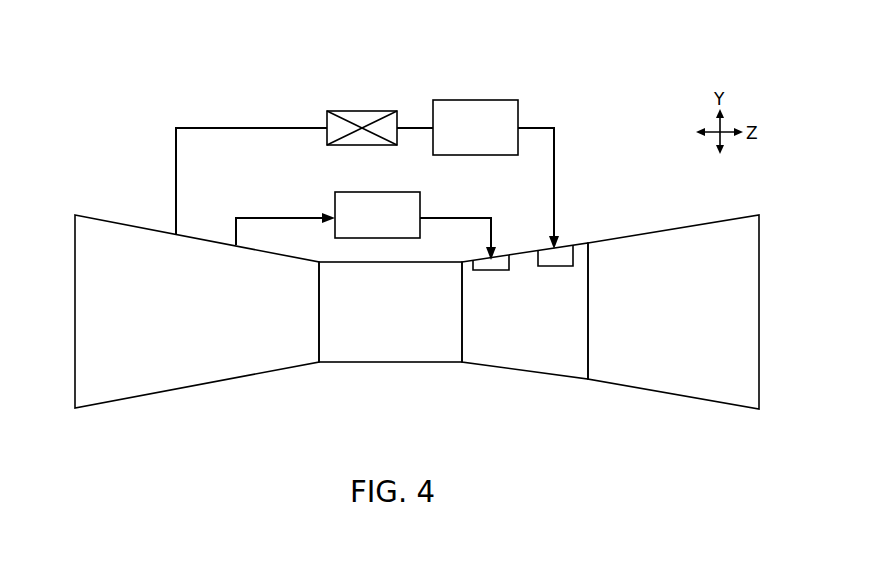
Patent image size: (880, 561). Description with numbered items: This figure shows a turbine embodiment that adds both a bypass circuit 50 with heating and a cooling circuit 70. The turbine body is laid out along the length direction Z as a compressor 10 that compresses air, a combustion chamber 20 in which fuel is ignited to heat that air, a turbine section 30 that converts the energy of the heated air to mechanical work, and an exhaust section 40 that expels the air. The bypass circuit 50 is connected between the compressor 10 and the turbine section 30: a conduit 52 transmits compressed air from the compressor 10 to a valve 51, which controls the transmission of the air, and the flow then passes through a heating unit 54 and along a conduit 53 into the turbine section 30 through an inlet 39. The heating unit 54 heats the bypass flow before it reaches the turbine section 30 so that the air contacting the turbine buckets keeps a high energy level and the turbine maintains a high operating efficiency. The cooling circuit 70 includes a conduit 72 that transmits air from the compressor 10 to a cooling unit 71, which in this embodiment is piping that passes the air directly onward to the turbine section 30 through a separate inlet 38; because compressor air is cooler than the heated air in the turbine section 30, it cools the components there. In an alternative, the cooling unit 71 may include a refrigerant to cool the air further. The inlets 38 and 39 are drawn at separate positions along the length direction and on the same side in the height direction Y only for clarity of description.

The compressor 10 is at (195, 377).
The combustion chamber 20 is at (393, 353).
The turbine section 30 is at (524, 362).
The exhaust section 40 is at (678, 382).
The inlet 38 is at (490, 273).
The inlet 39 is at (550, 270).
The bypass circuit 50 is at (521, 60).
The valve 51 is at (368, 111).
The conduit 52 is at (212, 125).
The conduit 53 is at (555, 198).
The heating unit 54 is at (518, 108).
The cooling circuit 70 is at (313, 184).
The cooling unit 71 is at (420, 197).
The conduit 72 is at (247, 214).